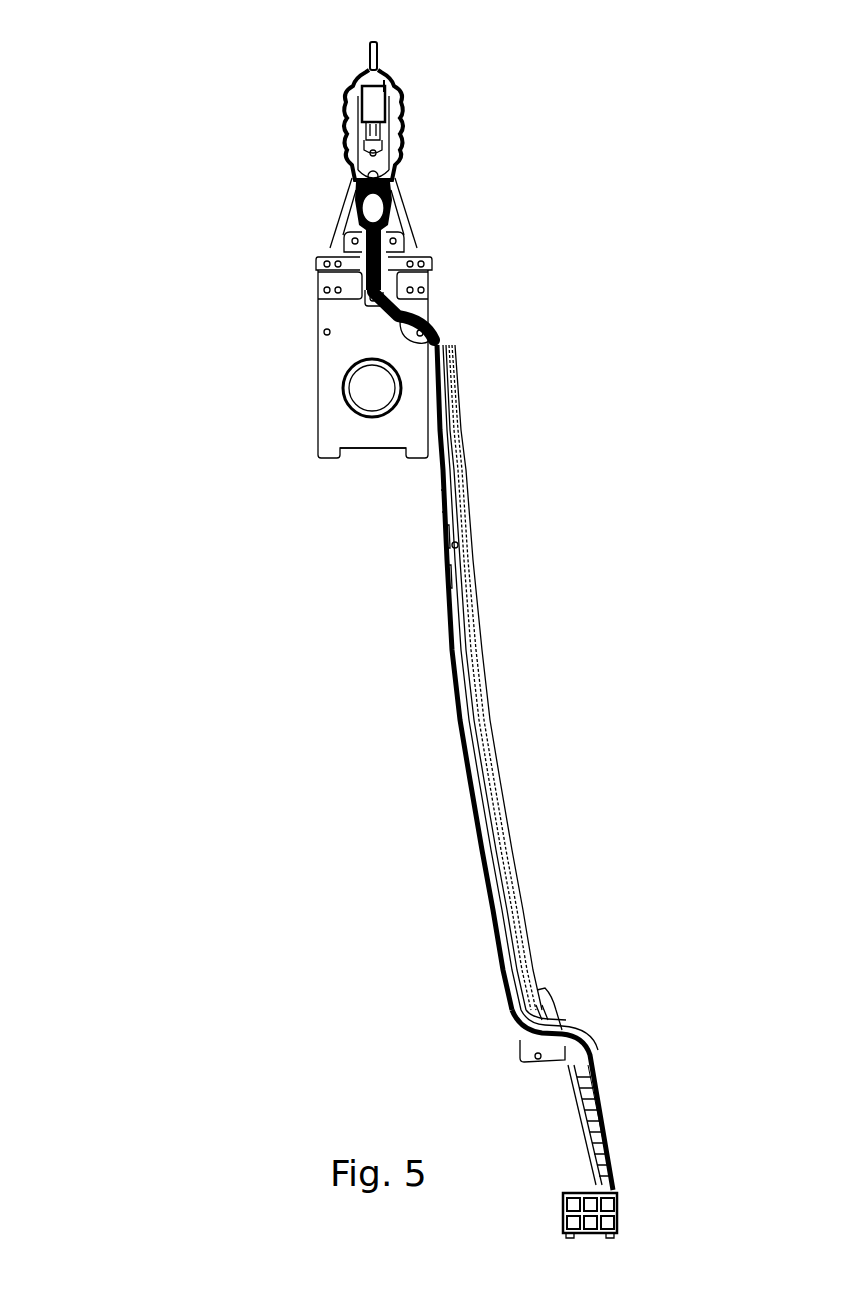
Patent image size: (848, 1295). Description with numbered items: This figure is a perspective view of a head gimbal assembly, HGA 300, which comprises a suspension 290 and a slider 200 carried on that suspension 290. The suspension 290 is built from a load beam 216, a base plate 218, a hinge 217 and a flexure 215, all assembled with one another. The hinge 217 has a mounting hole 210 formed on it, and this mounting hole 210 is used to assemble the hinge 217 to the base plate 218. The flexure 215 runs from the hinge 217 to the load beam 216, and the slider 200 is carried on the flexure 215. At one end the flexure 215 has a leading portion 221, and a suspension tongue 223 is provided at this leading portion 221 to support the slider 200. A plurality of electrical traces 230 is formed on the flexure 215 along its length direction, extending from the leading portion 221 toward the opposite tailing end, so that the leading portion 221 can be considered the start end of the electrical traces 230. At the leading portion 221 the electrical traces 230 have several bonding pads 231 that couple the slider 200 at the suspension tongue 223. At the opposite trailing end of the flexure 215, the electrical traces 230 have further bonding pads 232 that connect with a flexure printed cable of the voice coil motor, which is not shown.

The HGA 300 is at (86, 56).
The slider 200 is at (376, 100).
The suspension tongue 223 is at (355, 112).
The bonding pads 231 is at (387, 83).
The leading portion 221 is at (420, 98).
The flexure 215 is at (357, 180).
The load beam 216 is at (357, 225).
The suspension 290 is at (310, 253).
The hinge 217 is at (333, 277).
The base plate 218 is at (333, 347).
The mounting hole 210 is at (363, 397).
The electrical traces 230 is at (438, 600).
The bonding pads 232 is at (605, 1203).